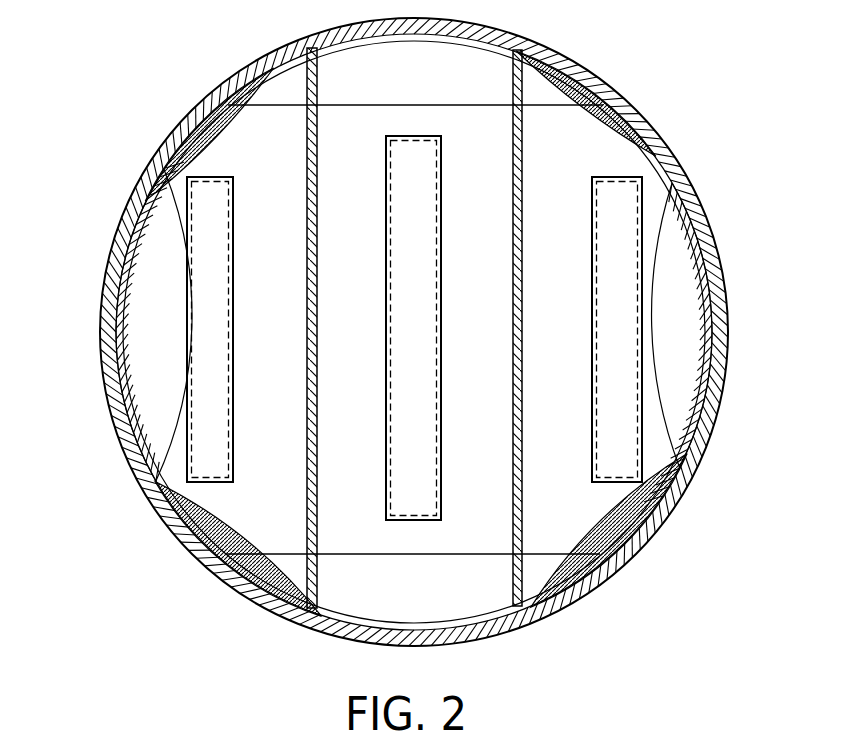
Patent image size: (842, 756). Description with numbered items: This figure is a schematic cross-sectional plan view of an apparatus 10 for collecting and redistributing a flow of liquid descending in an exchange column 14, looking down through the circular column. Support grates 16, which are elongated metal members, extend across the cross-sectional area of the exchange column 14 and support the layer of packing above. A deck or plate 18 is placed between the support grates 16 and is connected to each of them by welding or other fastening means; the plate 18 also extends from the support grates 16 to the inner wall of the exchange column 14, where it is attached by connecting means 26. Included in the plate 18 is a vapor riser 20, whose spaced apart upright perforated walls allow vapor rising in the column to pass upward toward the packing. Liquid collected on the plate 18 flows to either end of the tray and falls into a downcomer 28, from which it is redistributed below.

The apparatus 10 is at (383, 346).
The exchange column 14 is at (666, 143).
The support grates 16 is at (307, 503).
The plate 18 is at (543, 105).
The vapor riser 20 is at (440, 503).
The connecting means 26 is at (180, 148).
The downcomer 28 is at (380, 578).